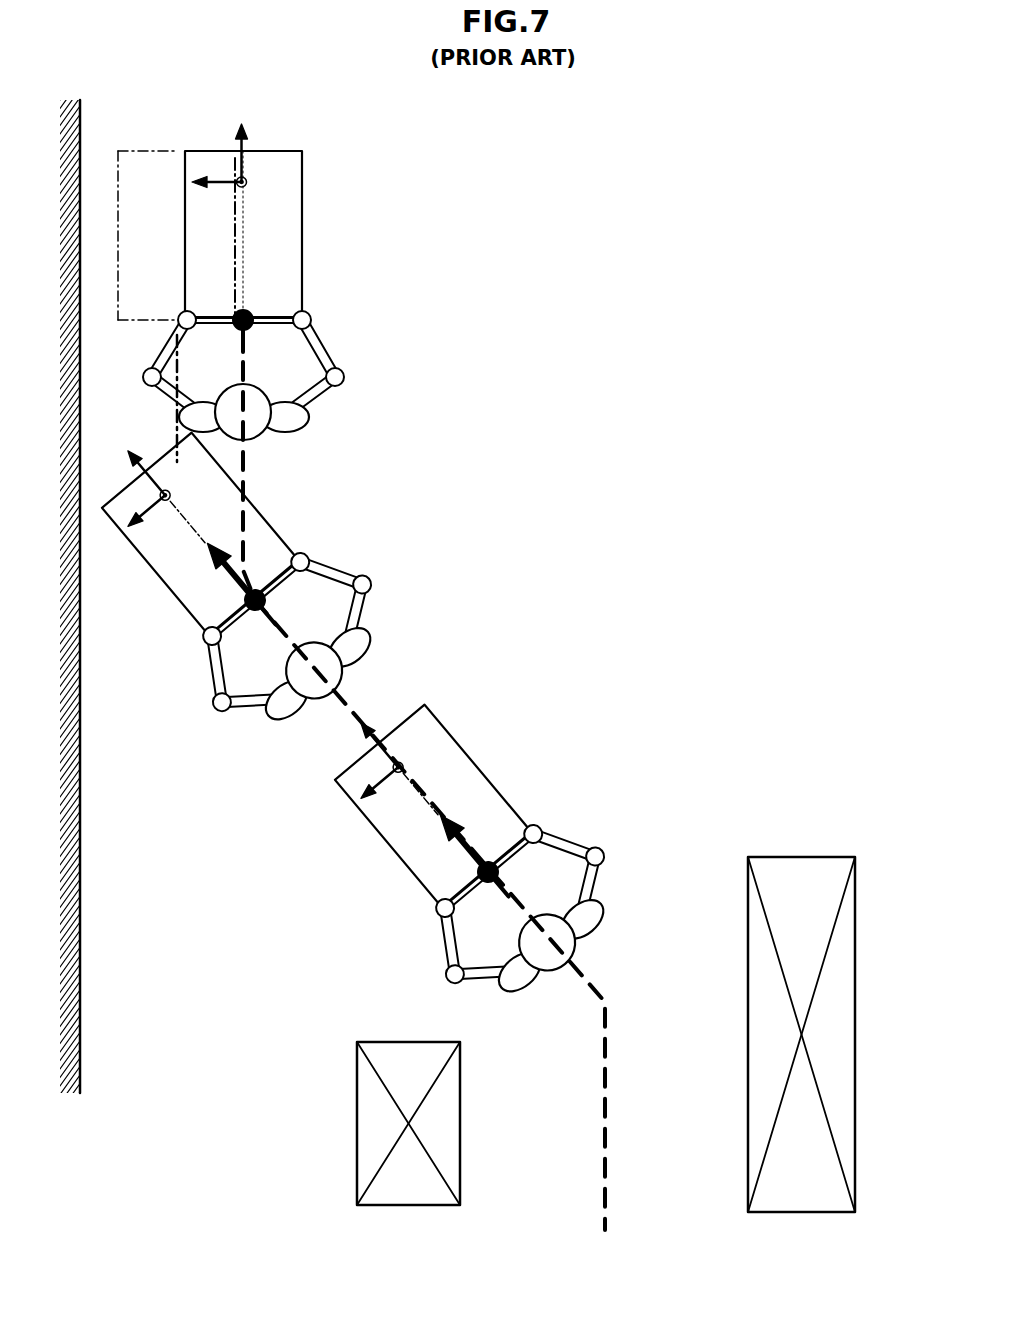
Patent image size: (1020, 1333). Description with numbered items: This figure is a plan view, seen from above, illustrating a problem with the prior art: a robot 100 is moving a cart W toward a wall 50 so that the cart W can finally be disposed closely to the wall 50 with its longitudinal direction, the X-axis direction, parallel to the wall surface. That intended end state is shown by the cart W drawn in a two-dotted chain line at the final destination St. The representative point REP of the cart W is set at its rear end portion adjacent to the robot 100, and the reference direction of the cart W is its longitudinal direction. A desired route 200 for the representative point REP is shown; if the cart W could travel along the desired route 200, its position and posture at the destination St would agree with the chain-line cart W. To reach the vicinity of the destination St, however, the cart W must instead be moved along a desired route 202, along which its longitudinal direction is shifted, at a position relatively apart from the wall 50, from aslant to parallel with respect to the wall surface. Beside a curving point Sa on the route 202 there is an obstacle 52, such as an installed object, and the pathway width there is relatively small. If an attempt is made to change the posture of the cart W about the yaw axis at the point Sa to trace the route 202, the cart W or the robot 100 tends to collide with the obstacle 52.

The wall 50 is at (82, 713).
The cart W is at (143, 150).
The robot 100 is at (320, 437).
The desired route 200 is at (176, 428).
The desired route 202 is at (247, 484).
The final destination St is at (370, 205).
The representative point REP is at (250, 318).
The obstacle 52 is at (460, 1100).
The curving point Sa is at (642, 1122).